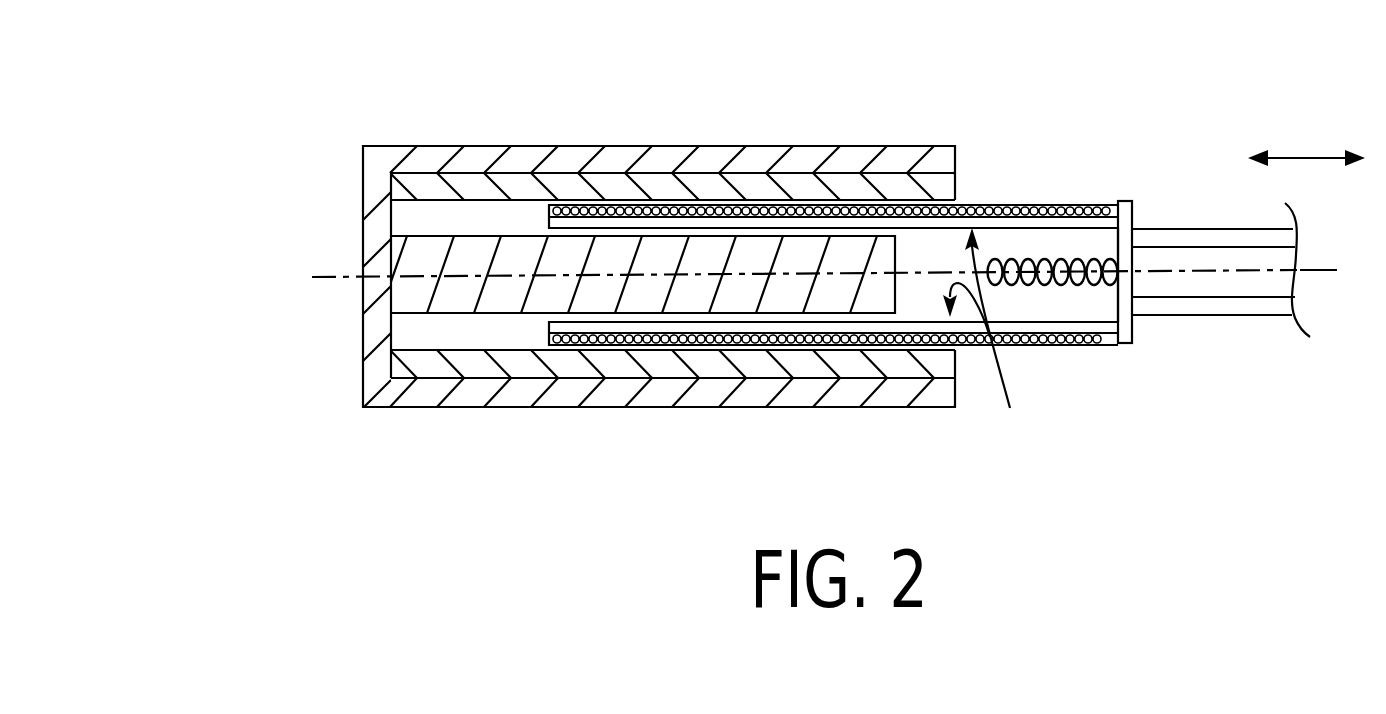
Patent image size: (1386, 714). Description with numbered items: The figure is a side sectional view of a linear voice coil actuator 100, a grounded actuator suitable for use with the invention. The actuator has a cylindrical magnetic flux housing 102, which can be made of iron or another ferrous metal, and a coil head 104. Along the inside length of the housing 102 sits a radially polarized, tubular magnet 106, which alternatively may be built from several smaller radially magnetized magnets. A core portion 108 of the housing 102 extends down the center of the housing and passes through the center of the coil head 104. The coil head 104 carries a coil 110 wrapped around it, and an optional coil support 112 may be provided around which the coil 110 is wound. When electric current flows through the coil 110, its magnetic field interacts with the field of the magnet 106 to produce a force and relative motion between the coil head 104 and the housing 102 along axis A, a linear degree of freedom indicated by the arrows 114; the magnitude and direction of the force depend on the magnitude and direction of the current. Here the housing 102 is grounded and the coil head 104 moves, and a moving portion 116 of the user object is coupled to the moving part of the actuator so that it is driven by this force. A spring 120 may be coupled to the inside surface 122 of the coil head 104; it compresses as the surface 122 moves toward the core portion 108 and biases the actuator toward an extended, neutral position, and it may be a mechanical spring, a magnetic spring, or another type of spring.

The linear voice coil actuator 100 is at (306, 250).
The magnetic flux housing 102 is at (392, 160).
The coil head 104 is at (1133, 214).
The tubular magnet 106 is at (537, 187).
The core portion 108 is at (438, 290).
The coil 110 is at (1015, 203).
The coil support 112 is at (993, 343).
The arrows 114 is at (1307, 157).
The moving portion of user object 116 is at (1215, 280).
The spring 120 is at (1040, 258).
The inside surface 122 is at (1117, 292).